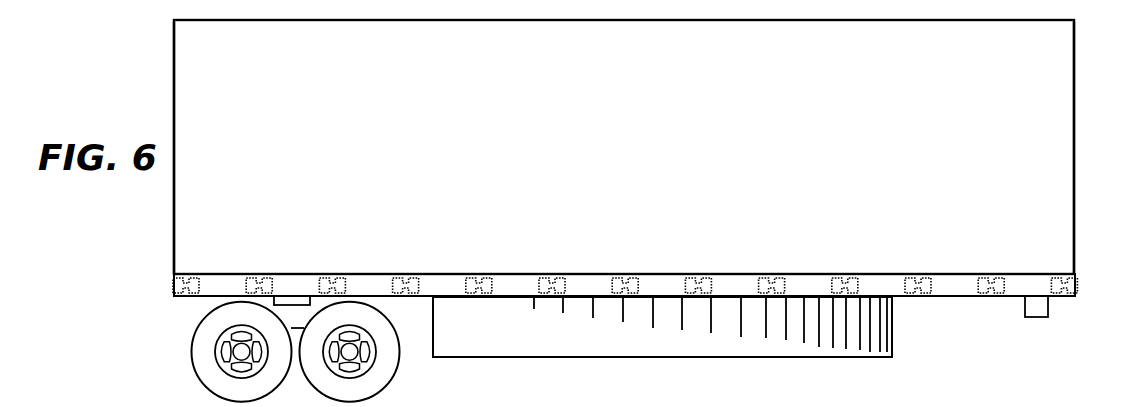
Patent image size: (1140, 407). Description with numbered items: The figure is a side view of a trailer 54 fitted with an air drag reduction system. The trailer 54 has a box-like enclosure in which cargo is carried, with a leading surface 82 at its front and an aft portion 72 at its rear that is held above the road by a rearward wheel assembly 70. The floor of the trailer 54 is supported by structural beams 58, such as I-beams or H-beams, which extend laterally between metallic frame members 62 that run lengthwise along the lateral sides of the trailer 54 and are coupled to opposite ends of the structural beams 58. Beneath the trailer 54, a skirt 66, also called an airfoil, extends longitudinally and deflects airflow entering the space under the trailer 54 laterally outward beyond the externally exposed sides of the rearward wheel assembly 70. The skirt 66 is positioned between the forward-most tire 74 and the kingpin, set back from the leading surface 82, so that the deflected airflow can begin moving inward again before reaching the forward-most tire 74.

The trailer 54 is at (653, 89).
The structural beams 58 is at (408, 280).
The metallic frame members 62 is at (585, 284).
The skirt 66 is at (619, 345).
The rearward wheel assembly 70 is at (259, 318).
The aft portion 72 is at (174, 242).
The forward-most tire 74 is at (367, 308).
The leading surface 82 is at (1075, 157).